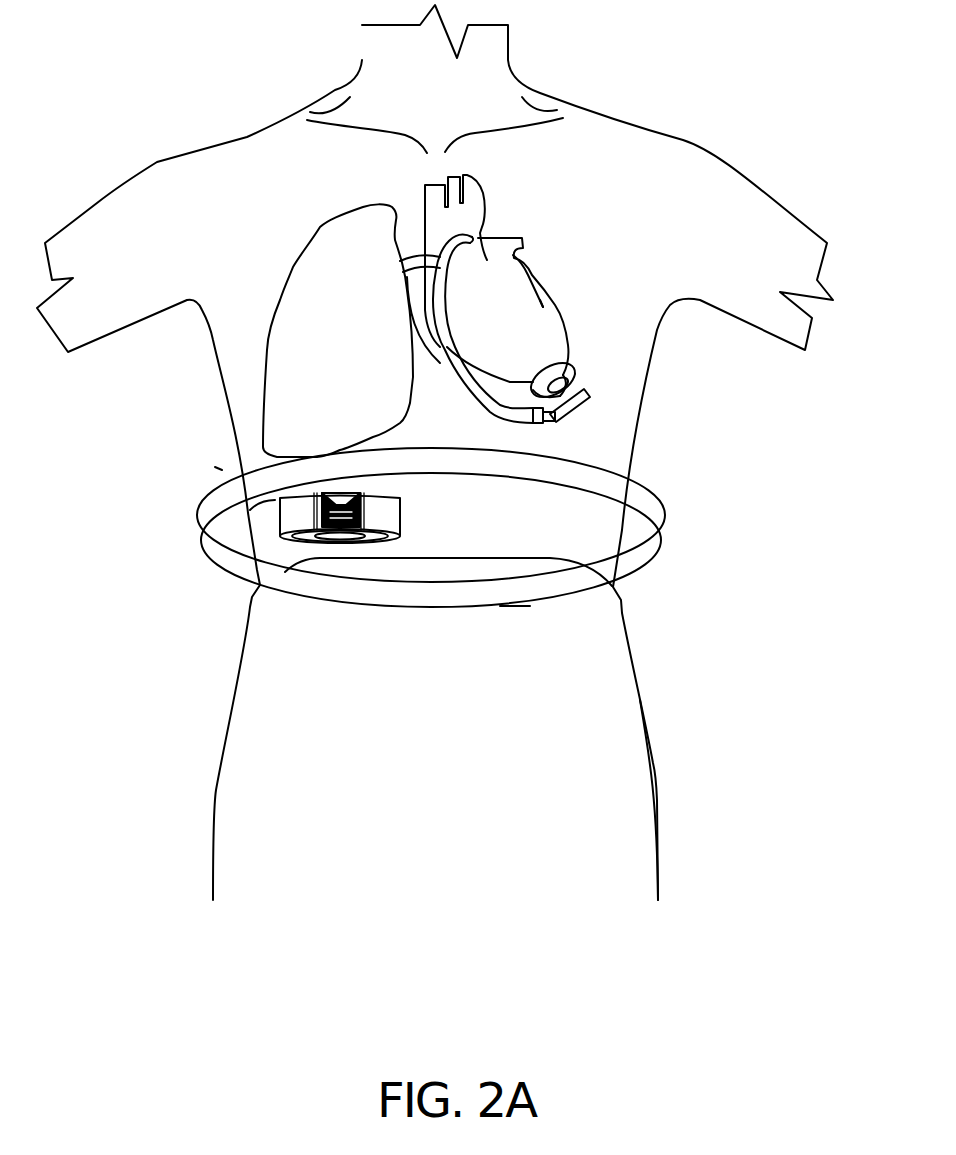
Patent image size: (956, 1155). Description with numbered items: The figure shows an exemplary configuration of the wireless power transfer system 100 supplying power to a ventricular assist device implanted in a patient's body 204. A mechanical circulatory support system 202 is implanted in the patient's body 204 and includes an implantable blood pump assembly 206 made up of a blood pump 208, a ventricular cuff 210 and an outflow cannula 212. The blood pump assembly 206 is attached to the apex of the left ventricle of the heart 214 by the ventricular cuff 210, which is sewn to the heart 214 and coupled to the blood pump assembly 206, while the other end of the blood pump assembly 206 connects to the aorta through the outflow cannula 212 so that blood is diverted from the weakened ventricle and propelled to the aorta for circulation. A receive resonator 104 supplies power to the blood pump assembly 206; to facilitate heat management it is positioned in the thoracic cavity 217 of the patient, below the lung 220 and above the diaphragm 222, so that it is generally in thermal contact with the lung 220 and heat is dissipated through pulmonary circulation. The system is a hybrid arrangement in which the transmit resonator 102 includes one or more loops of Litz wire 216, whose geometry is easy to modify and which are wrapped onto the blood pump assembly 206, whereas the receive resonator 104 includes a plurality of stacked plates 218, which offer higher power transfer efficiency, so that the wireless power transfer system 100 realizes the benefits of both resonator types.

The wireless power transfer system 100 is at (196, 455).
The transmit resonator 102 is at (668, 578).
The receive resonator 104 is at (458, 568).
The mechanical circulatory support system 202 is at (598, 292).
The patient's body 204 is at (653, 762).
The implantable blood pump assembly 206 is at (577, 380).
The blood pump 208 is at (603, 350).
The ventricular cuff 210 is at (556, 374).
The outflow cannula 212 is at (483, 406).
The heart 214 is at (543, 307).
The loops of Litz wire 216 is at (517, 605).
The thoracic cavity 217 is at (263, 513).
The stacked plates 218 is at (297, 537).
The lung 220 is at (303, 280).
The diaphragm 222 is at (450, 560).